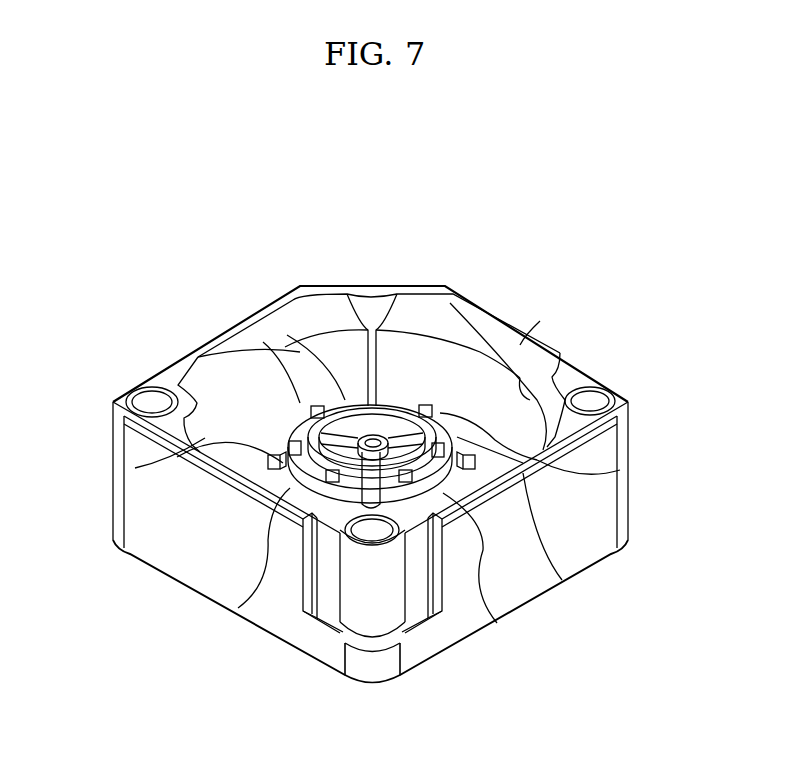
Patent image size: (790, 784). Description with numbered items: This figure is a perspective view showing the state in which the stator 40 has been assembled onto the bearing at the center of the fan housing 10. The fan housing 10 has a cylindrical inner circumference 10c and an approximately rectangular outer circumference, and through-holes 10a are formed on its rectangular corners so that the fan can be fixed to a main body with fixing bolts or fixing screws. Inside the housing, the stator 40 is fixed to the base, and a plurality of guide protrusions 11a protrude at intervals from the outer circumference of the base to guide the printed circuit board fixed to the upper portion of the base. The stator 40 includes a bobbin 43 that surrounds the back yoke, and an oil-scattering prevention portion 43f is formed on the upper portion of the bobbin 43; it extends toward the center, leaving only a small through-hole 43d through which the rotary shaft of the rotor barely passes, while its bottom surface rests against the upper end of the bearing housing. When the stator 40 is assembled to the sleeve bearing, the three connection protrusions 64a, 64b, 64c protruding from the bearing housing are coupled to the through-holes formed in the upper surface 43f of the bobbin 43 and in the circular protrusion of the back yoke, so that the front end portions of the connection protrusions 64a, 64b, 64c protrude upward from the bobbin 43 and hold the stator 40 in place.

The fan housing 10 is at (540, 321).
The through-holes 10a is at (630, 402).
The cylindrical inner circumference 10c is at (560, 355).
The guide protrusions 11a is at (135, 468).
The stator 40 is at (432, 400).
The bobbin 43 is at (497, 623).
The through-hole 43d is at (397, 403).
The oil-scattering prevention portion 43f is at (192, 380).
The connection protrusion 64a is at (238, 608).
The connection protrusion 64b is at (620, 470).
The connection protrusion 64c is at (263, 342).